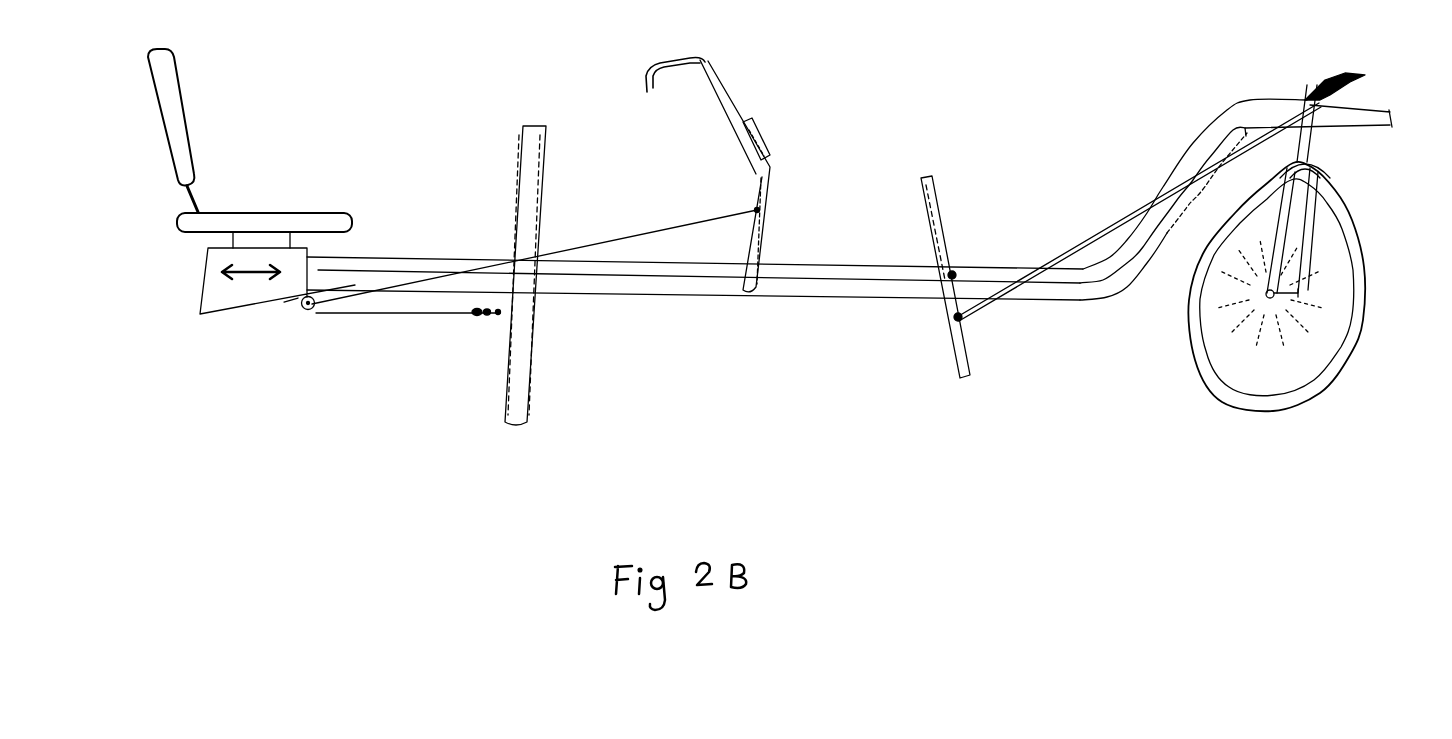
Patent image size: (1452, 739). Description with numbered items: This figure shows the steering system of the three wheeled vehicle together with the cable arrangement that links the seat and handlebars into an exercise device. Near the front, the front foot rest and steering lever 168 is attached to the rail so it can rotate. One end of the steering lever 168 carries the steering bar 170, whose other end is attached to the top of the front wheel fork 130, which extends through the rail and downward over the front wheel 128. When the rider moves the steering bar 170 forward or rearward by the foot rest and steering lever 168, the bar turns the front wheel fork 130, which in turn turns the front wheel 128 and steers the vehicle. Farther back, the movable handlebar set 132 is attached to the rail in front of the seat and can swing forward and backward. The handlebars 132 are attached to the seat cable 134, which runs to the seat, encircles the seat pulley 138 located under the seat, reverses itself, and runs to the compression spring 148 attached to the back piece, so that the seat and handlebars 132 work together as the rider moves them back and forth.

The front wheel 128 is at (1303, 393).
The front wheel fork 130 is at (1313, 147).
The movable handlebar set 132 is at (715, 80).
The seat cable 134 is at (623, 233).
The seat pulley 138 is at (306, 312).
The compression spring 148 is at (480, 314).
The front foot rest and steering lever 168 is at (962, 380).
The steering bar 170 is at (1085, 238).